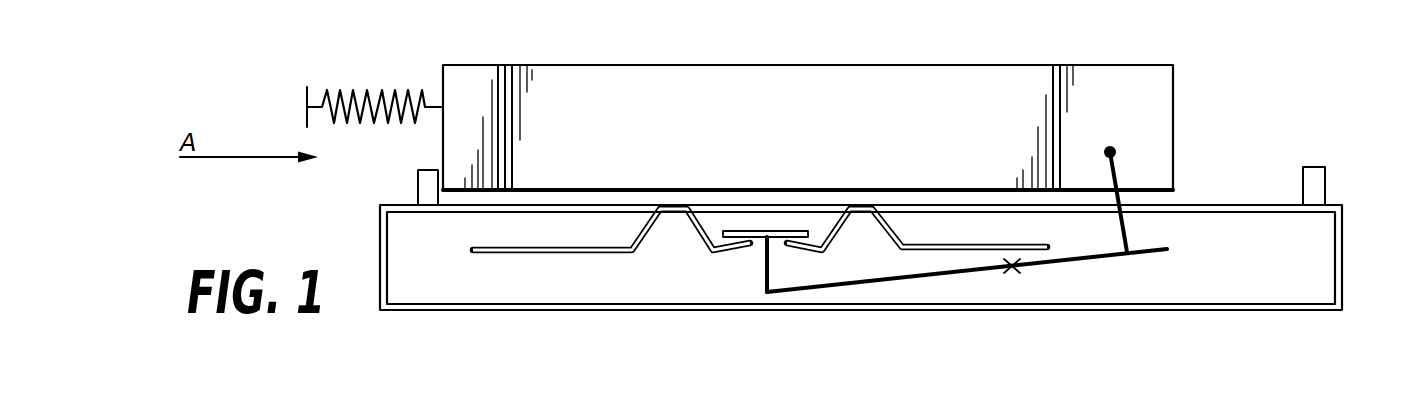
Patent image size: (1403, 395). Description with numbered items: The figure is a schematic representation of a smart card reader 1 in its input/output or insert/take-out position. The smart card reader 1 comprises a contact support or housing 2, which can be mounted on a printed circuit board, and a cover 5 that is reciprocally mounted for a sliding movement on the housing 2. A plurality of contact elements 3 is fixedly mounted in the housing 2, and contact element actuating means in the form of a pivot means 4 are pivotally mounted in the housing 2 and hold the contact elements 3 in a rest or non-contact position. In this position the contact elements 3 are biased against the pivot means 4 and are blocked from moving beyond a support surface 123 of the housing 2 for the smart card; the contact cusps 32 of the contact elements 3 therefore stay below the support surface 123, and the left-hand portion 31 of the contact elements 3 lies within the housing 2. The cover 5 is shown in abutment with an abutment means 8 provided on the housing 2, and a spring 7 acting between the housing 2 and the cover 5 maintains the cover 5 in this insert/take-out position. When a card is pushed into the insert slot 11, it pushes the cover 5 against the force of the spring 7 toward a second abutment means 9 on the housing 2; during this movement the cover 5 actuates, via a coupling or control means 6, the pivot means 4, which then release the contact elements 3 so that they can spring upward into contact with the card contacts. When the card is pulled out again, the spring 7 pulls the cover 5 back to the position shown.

The smart card reader 1 is at (1288, 95).
The housing 2 is at (1343, 289).
The contact elements 3 is at (903, 258).
The pivot means 4 is at (959, 286).
The cover 5 is at (1175, 105).
The control means 6 is at (1119, 169).
The spring 7 is at (381, 95).
The abutment means 8 is at (418, 188).
The abutment means 9 is at (1325, 182).
The insert slot 11 is at (570, 196).
The left spring strip portion 31 is at (530, 254).
The contact cusps 32 is at (863, 205).
The support surface 123 is at (630, 205).